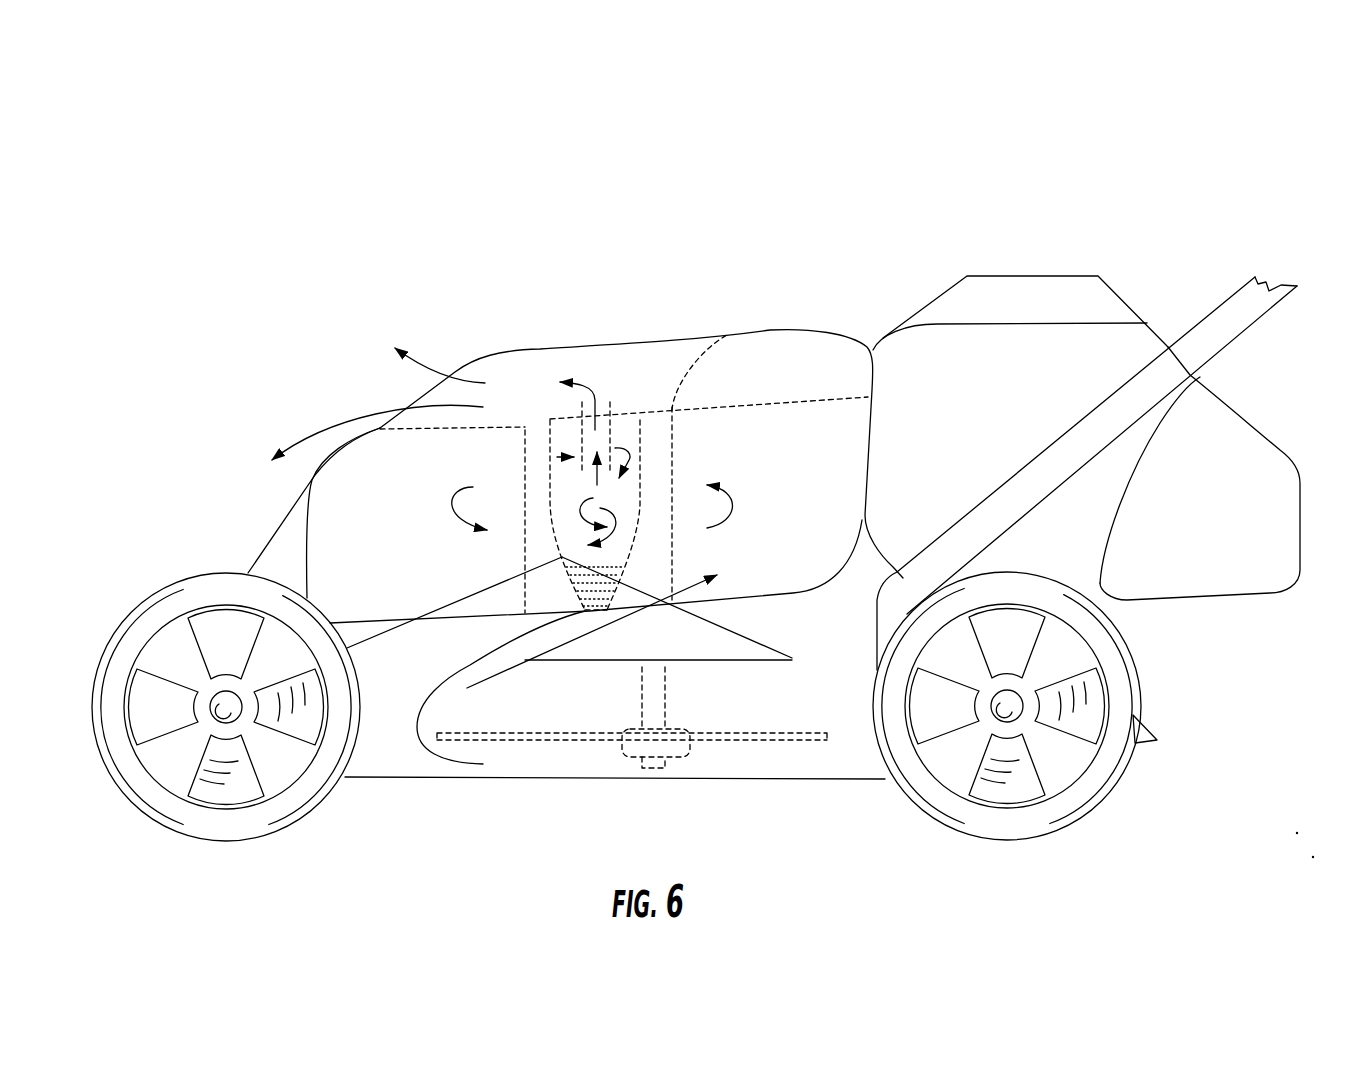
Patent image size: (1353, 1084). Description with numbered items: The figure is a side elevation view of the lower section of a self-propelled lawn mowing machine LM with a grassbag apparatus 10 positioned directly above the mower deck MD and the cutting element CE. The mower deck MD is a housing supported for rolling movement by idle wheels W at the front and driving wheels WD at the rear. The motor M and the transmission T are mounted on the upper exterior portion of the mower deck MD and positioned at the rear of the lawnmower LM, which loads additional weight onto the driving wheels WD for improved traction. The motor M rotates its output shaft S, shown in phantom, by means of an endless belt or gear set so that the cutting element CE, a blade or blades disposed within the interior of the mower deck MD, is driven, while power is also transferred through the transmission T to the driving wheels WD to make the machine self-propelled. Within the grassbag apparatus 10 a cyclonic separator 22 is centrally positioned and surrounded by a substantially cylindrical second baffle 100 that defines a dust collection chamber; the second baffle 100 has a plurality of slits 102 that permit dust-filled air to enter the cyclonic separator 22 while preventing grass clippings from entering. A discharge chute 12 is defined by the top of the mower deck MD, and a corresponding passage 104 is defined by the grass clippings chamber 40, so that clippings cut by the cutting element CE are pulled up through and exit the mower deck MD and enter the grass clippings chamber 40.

The self-propelled lawn mowing machine LM is at (209, 201).
The grassbag apparatus 10 is at (385, 283).
The discharge chute 12 is at (477, 612).
The cyclonic separator 22 is at (628, 482).
The grass clippings chamber 40 is at (357, 490).
The second baffle 100 is at (680, 500).
The slits 102 is at (547, 455).
The passage 104 is at (647, 582).
The motor M is at (1023, 293).
The wheels W is at (133, 640).
The driving wheels WD is at (1087, 785).
The transmission T is at (1053, 557).
The output shaft S is at (636, 720).
The cutting element CE is at (725, 742).
The mower deck MD is at (830, 627).